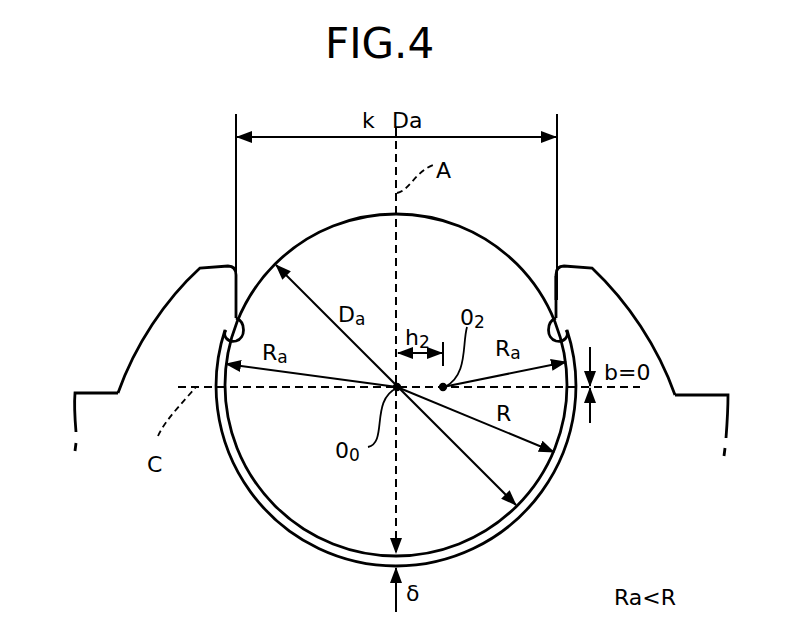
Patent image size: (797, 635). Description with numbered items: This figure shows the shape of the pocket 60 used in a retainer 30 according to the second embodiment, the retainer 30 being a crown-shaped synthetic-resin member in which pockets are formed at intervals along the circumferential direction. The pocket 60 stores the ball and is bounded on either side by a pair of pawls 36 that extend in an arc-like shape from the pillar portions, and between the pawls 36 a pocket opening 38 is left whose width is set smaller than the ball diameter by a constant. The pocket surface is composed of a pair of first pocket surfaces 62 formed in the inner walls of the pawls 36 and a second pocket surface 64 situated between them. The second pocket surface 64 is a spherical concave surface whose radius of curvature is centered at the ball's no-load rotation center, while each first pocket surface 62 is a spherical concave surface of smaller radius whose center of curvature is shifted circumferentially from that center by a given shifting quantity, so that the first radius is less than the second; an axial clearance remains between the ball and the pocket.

The retainer 30 is at (117, 352).
The pawls 36 is at (192, 290).
The pocket opening 38 is at (555, 300).
The pocket 60 is at (316, 541).
The first pocket surfaces 62 is at (222, 338).
The second pocket surface 64 is at (492, 540).